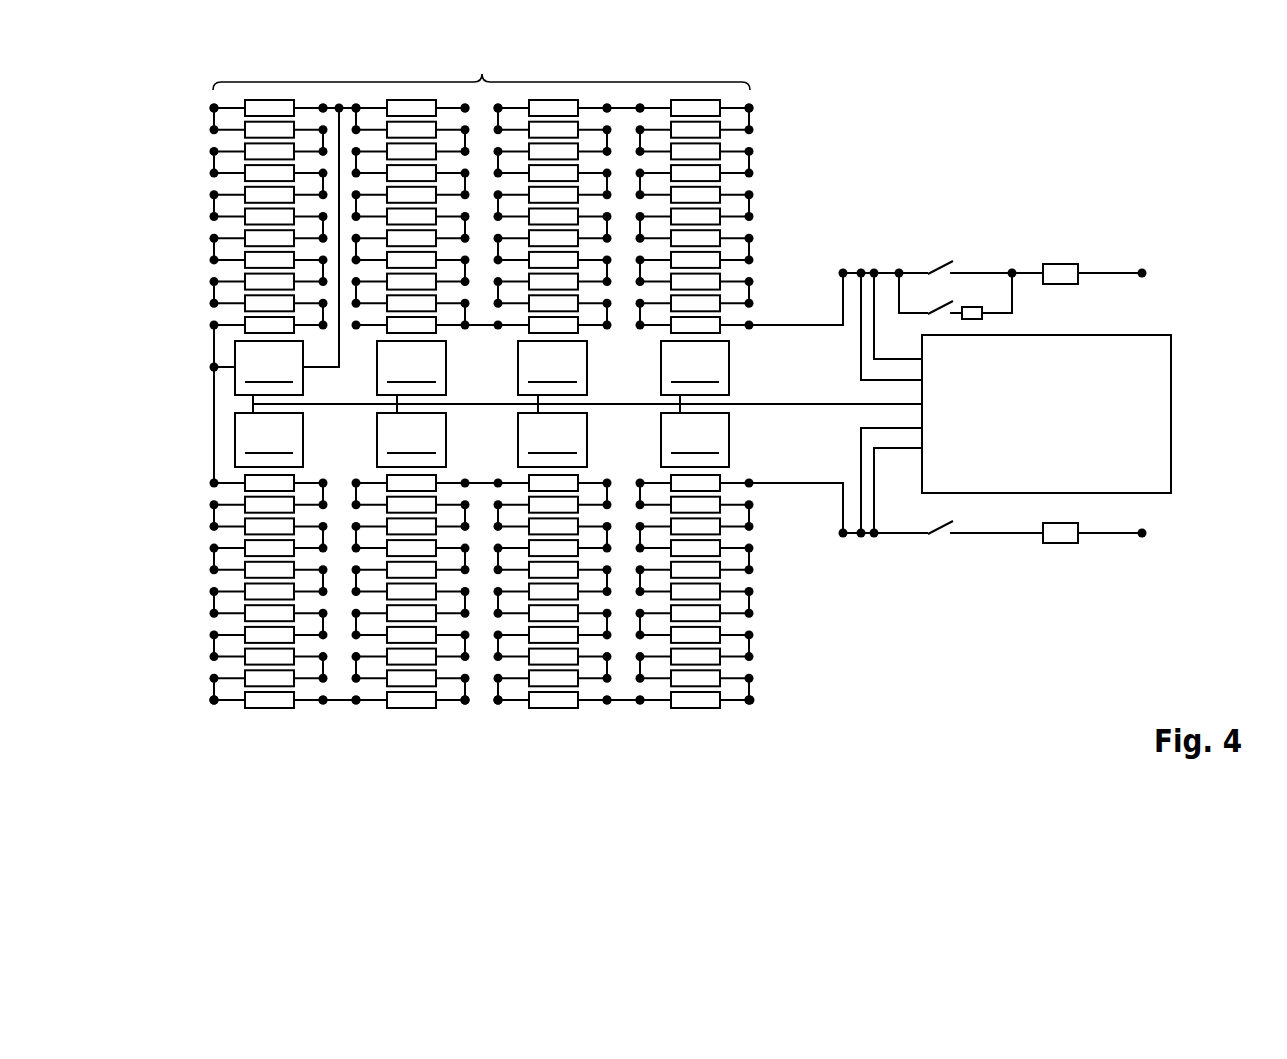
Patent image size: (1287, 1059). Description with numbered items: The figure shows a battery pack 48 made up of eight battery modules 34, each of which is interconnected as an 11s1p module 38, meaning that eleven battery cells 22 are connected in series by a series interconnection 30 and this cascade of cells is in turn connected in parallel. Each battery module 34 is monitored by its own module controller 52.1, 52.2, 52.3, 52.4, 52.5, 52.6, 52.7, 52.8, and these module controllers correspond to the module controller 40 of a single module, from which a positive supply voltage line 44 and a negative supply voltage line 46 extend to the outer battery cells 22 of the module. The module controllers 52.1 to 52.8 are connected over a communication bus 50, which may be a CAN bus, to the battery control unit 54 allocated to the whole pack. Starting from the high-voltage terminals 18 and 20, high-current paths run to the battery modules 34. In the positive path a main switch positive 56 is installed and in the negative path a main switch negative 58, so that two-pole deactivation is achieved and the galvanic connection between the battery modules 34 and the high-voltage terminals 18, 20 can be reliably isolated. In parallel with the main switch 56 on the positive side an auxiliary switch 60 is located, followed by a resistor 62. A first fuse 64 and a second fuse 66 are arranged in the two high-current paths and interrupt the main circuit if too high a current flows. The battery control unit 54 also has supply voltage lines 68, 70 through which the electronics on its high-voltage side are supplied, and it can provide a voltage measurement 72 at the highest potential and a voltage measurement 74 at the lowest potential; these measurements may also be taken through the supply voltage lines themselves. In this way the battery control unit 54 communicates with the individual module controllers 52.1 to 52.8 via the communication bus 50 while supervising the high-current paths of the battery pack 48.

The high-voltage terminal 18 is at (1142, 268).
The high-voltage terminal 20 is at (1142, 540).
The battery cell 22 is at (693, 99).
The series interconnection 30 is at (232, 705).
The battery module 34 is at (205, 708).
The 11s1p module 38 is at (749, 715).
The module controller 40 is at (226, 391).
The supply voltage line (positive) 44 is at (340, 352).
The supply voltage line (negative) 46 is at (228, 365).
The battery pack 48 is at (481, 70).
The communication bus 50 is at (790, 404).
The module controller 52.1 is at (269, 368).
The module controller 52.2 is at (411, 368).
The module controller 52.3 is at (552, 368).
The module controller 52.4 is at (695, 368).
The module controller 52.5 is at (695, 440).
The module controller 52.6 is at (552, 440).
The module controller 52.7 is at (411, 440).
The module controller 52.8 is at (269, 440).
The battery control unit 54 is at (1171, 410).
The main switch positive 56 is at (946, 262).
The main switch negative 58 is at (940, 540).
The auxiliary switch 60 is at (940, 300).
The resistor 62 is at (972, 307).
The first fuse 64 is at (1060, 264).
The second fuse 66 is at (1060, 543).
The supply voltage line 68 is at (922, 352).
The supply voltage line 70 is at (922, 452).
The voltage measurement 72 is at (922, 372).
The voltage measurement 74 is at (922, 430).